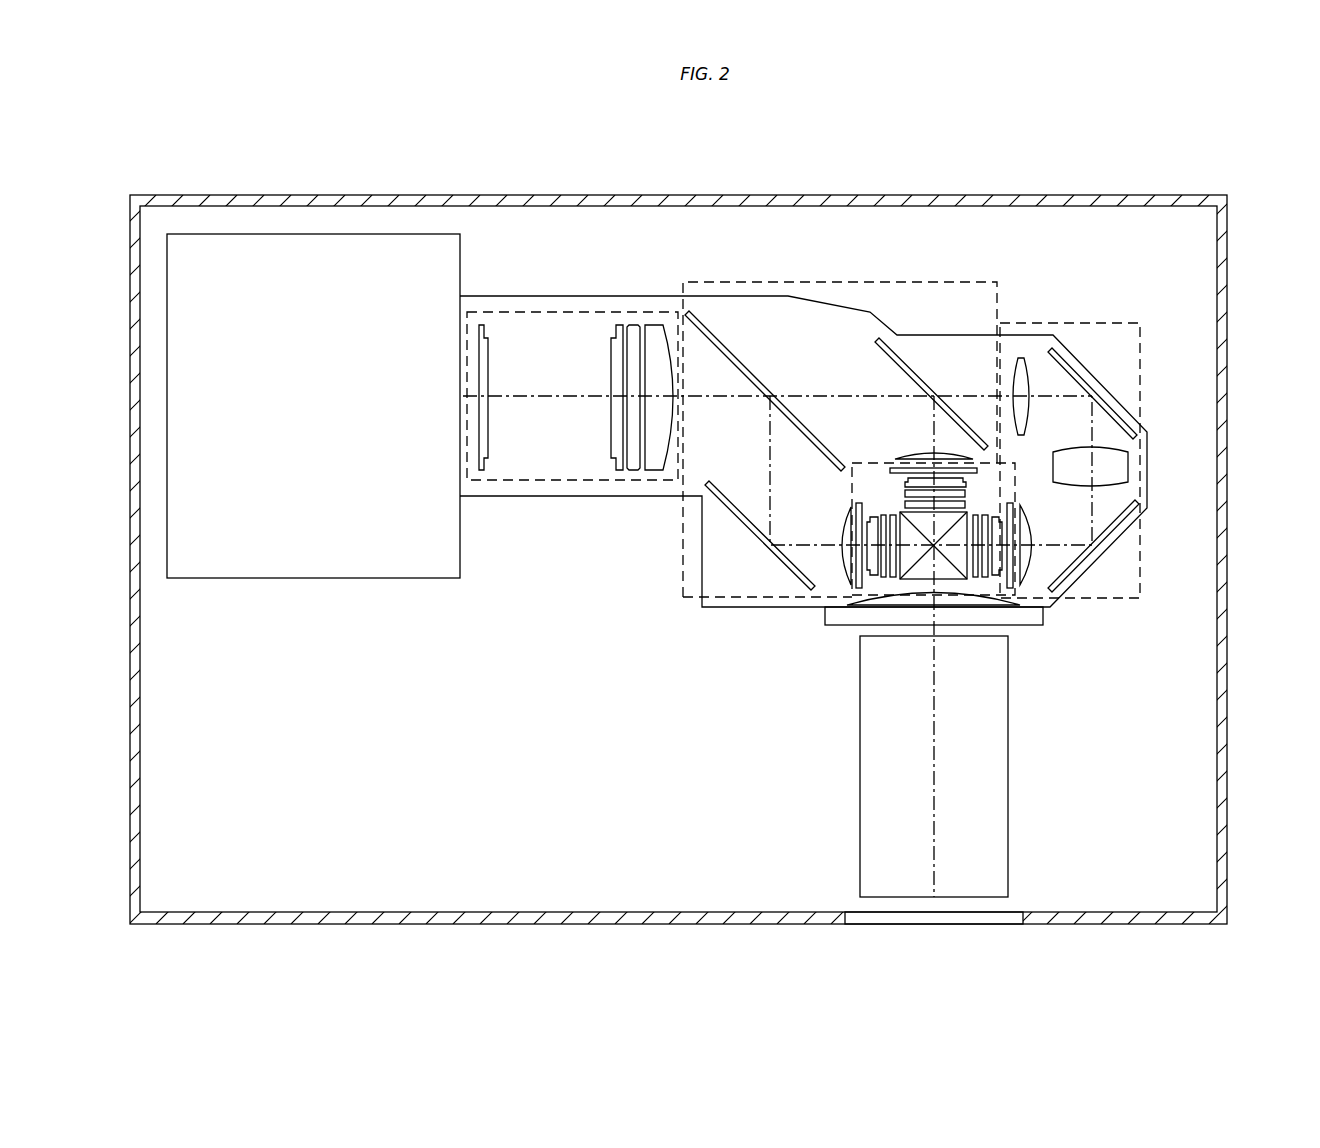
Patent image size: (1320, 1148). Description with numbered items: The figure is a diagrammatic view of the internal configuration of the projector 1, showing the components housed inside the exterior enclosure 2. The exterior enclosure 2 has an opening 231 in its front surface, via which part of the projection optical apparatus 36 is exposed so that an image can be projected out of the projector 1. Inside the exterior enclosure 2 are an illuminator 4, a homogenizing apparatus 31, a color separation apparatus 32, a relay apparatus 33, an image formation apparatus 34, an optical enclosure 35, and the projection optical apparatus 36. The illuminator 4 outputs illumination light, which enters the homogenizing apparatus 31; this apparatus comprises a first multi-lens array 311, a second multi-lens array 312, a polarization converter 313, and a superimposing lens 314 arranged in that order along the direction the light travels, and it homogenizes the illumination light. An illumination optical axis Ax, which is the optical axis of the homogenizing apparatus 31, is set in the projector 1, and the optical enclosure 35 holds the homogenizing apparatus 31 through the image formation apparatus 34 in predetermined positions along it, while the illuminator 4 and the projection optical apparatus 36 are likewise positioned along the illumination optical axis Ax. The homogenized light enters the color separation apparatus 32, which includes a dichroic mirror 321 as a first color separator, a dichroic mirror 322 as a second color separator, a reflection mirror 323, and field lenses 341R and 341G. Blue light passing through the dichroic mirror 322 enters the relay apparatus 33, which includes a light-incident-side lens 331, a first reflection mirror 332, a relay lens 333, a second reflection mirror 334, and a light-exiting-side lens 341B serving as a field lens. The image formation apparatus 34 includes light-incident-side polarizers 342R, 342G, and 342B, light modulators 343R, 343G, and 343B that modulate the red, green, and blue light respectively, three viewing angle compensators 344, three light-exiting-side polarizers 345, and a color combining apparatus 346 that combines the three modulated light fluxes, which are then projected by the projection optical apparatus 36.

The projector 1 is at (1237, 172).
The exterior enclosure 2 is at (1228, 245).
The opening 231 is at (848, 915).
The illuminator 4 is at (318, 579).
The homogenizing apparatus 31 is at (545, 308).
The first multi-lens array 311 is at (488, 340).
The second multi-lens array 312 is at (611, 373).
The polarization converter 313 is at (633, 325).
The superimposing lens 314 is at (655, 325).
The color separation apparatus 32 is at (847, 281).
The dichroic mirror 321 is at (753, 366).
The dichroic mirror 322 is at (898, 351).
The reflection mirror 323 is at (727, 497).
The relay apparatus 33 is at (1113, 319).
The light-incident-side lens 331 is at (1020, 358).
The first reflection mirror 332 is at (1086, 385).
The relay lens 333 is at (1130, 465).
The second reflection mirror 334 is at (1118, 530).
The image formation apparatus 34 is at (870, 601).
The field lens 341R is at (845, 530).
The field lens 341G is at (917, 455).
The light-exiting-side lens 341B is at (1033, 530).
The light-incident-side polarizer 342R is at (858, 590).
The light-incident-side polarizer 342G is at (890, 470).
The light-incident-side polarizer 342B is at (1020, 588).
The light modulator 343R is at (870, 578).
The light modulator 343G is at (908, 482).
The light modulator 343B is at (997, 578).
The viewing angle compensator 344 is at (905, 493).
The light-exiting-side polarizer 345 is at (965, 505).
The color combining apparatus 346 is at (943, 600).
The optical enclosure 35 is at (763, 296).
The projection optical apparatus 36 is at (1008, 750).
The illumination optical axis Ax is at (548, 400).